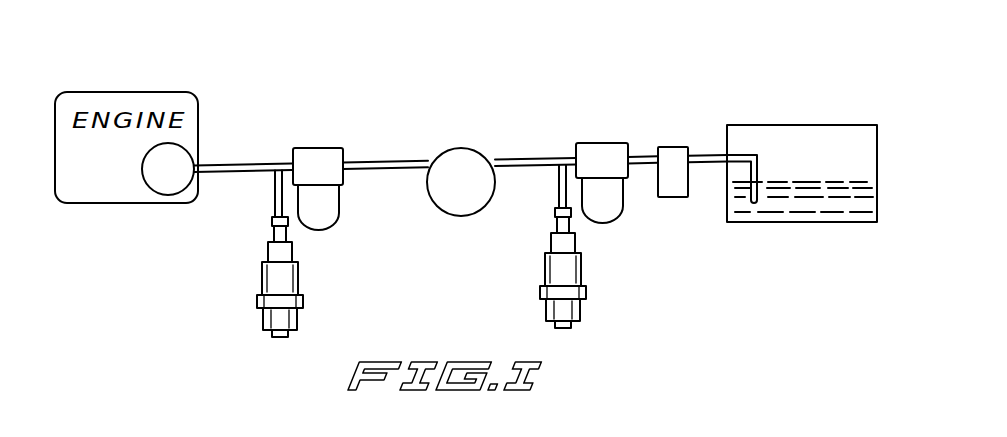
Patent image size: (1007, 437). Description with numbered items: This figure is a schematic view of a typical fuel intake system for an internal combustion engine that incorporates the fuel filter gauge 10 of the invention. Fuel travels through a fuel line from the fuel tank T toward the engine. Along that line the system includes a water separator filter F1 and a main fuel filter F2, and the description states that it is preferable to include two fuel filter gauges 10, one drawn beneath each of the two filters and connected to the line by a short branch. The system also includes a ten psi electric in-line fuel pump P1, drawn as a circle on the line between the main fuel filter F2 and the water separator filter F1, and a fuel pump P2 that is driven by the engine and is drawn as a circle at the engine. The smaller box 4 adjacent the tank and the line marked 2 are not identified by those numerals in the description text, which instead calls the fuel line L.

The fuel line 2 is at (397, 168).
The fuel pump 4 is at (673, 187).
The fuel filter gauge 10 is at (256, 283).
The electric in-line fuel pump P1 is at (463, 158).
The fuel pump P2 is at (172, 183).
The water separator filter F1 is at (593, 150).
The main fuel filter F2 is at (322, 157).
The fuel tank T is at (800, 123).